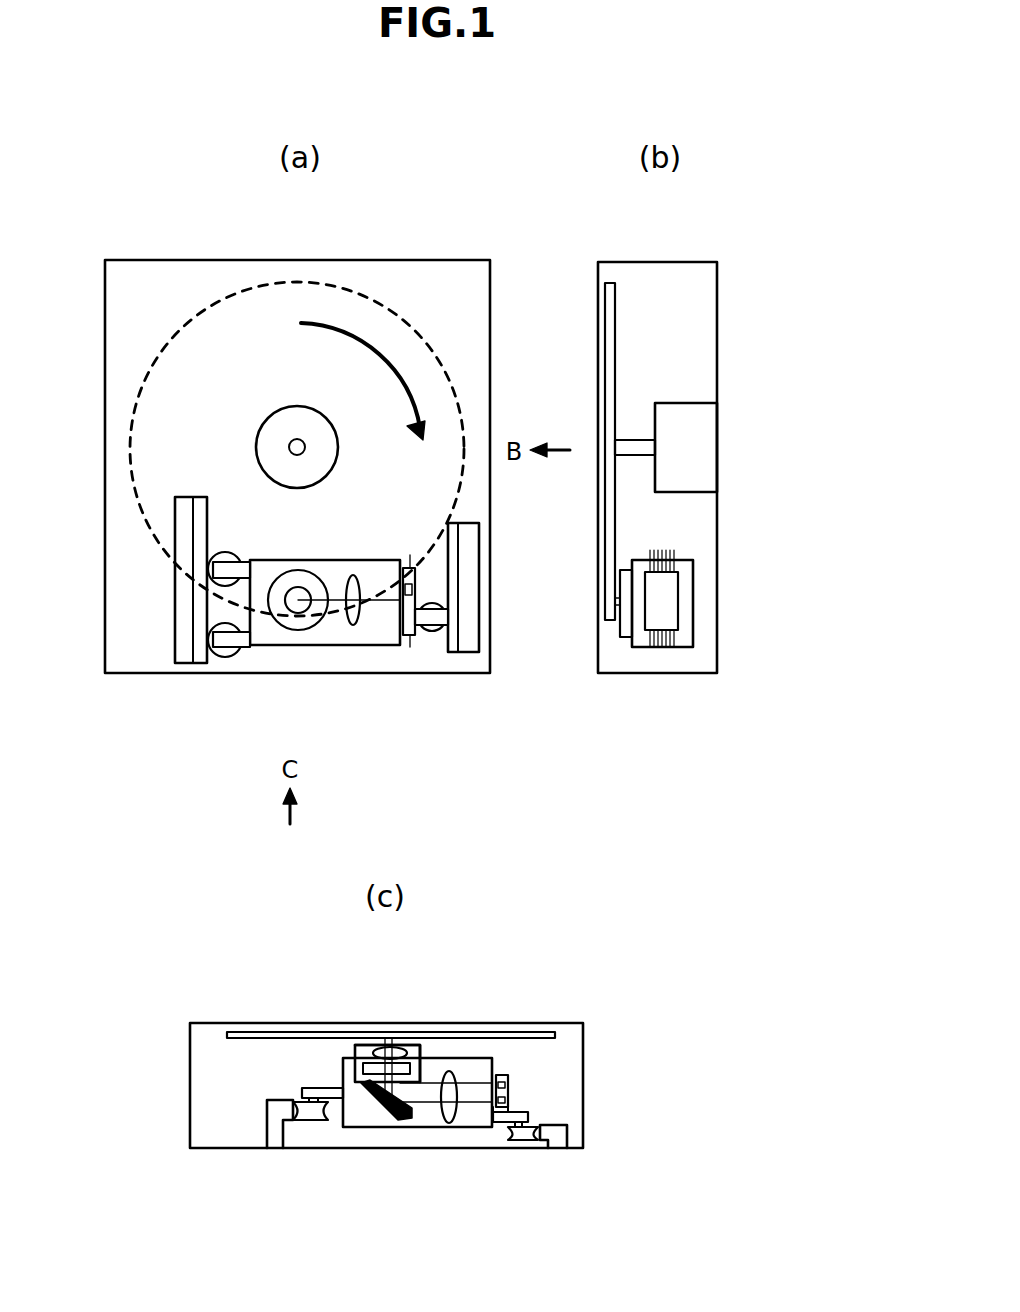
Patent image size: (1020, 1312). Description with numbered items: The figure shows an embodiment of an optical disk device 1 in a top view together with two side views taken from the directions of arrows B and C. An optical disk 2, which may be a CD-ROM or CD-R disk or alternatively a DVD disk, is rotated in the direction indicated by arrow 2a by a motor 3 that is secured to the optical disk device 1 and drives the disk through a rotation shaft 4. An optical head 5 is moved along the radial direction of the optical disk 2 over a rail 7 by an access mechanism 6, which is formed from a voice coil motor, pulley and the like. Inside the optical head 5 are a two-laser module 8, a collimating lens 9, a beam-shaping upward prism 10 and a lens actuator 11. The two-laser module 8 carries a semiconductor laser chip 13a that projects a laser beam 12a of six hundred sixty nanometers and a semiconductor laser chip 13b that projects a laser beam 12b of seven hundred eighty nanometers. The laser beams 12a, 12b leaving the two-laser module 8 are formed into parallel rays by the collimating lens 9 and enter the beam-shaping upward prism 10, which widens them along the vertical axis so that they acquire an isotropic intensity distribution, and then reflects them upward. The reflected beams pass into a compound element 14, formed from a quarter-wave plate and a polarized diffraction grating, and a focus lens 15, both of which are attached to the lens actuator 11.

The optical disk device 1 is at (170, 260).
The optical disk 2 is at (346, 284).
The rotation direction of disk 2a is at (382, 356).
The motor 3 is at (257, 430).
The rotation shaft 4 is at (298, 438).
The optical head 5 is at (357, 645).
The access mechanism 6 is at (315, 1122).
The rail 7 is at (183, 660).
The two-laser module 8 is at (227, 657).
The collimating lens 9 is at (358, 623).
The beam-shaping upward prism 10 is at (395, 1103).
The lens actuator 11 is at (313, 637).
The laser beam 12a is at (476, 1060).
The laser beam 12b is at (476, 1060).
The semiconductor laser chip 13a is at (417, 587).
The semiconductor laser chip 13b is at (510, 1087).
The compound element 14 is at (415, 1047).
The focus lens 15 is at (282, 613).